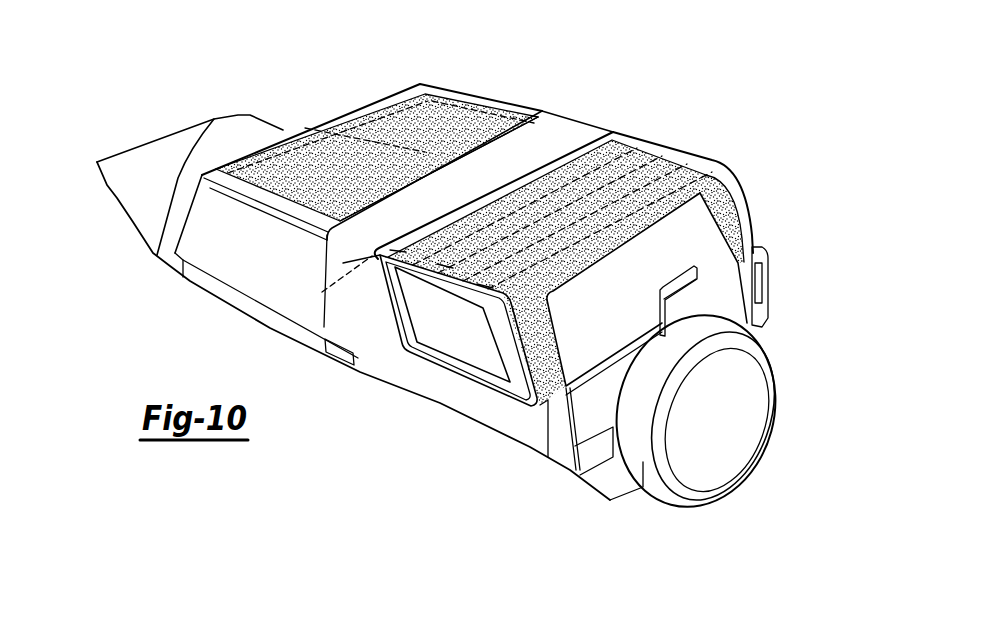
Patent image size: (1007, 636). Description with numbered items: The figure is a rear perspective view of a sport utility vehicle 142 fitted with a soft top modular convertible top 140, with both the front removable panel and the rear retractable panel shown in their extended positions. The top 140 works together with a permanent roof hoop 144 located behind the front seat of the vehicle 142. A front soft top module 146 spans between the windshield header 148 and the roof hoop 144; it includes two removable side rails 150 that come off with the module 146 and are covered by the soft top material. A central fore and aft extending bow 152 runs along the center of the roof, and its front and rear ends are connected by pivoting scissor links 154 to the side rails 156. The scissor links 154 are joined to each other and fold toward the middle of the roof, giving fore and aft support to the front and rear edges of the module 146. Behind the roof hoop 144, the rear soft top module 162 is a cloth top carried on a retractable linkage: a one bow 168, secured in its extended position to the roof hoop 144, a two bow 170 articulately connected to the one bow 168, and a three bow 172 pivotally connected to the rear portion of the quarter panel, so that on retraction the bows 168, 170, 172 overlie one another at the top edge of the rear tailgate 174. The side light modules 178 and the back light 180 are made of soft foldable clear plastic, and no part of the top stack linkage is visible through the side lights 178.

The soft top modular convertible top 140 is at (494, 105).
The vehicle 142 is at (232, 327).
The permanent roof hoop 144 is at (370, 226).
The front soft top module 146 is at (372, 100).
The windshield header 148 is at (322, 103).
The removable side rails 150 is at (425, 92).
The central fore and aft extending bow 152 is at (330, 127).
The pivoting scissor links 154 is at (412, 178).
The side rails 156 is at (237, 162).
The rear soft top module 162 is at (663, 160).
The one bow 168 is at (322, 292).
The two bow 170 is at (640, 133).
The three bow 172 is at (693, 157).
The rear tailgate 174 is at (720, 297).
The side light modules 178 is at (470, 345).
The back light 180 is at (590, 318).